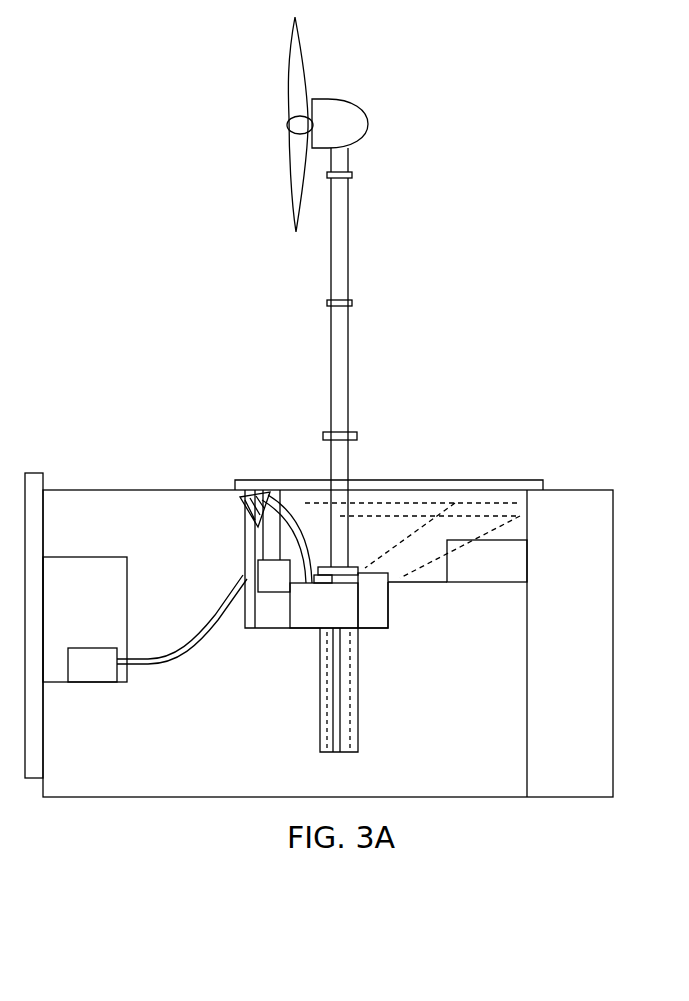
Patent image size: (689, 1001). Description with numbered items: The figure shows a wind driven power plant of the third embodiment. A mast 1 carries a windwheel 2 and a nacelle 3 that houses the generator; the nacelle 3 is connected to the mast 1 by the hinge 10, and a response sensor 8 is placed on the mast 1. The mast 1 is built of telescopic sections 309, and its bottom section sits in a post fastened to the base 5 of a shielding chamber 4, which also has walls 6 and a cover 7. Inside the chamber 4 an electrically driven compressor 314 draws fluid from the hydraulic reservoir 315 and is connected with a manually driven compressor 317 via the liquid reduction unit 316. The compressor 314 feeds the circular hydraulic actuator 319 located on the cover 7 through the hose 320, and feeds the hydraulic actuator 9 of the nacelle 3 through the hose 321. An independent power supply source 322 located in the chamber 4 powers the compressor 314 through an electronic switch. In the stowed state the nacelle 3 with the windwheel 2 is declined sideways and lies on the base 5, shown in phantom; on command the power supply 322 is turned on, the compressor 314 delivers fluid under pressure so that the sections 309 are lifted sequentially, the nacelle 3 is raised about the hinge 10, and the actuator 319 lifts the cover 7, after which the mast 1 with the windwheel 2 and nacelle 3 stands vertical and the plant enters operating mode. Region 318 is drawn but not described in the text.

The mast 1 is at (342, 358).
The windwheel 2 is at (306, 73).
The nacelle 3 is at (343, 127).
The shielding chamber 4 is at (385, 583).
The base 5 is at (243, 575).
The walls 6 is at (298, 647).
The cover 7 is at (522, 478).
The response sensor 8 is at (350, 153).
The hydraulic actuator 9 is at (333, 598).
The hinge 10 is at (352, 173).
The sections 309 is at (327, 378).
The electrically driven compressor 314 is at (365, 607).
The hydraulic reservoir 315 is at (282, 600).
The liquid reduction unit 316 is at (258, 560).
The manually driven compressor 317 is at (85, 657).
The filling region 318 is at (458, 512).
The circular hydraulic actuator 319 is at (255, 520).
The hose 320 is at (295, 527).
The hose 321 is at (343, 565).
The independent power supply source 322 is at (508, 558).